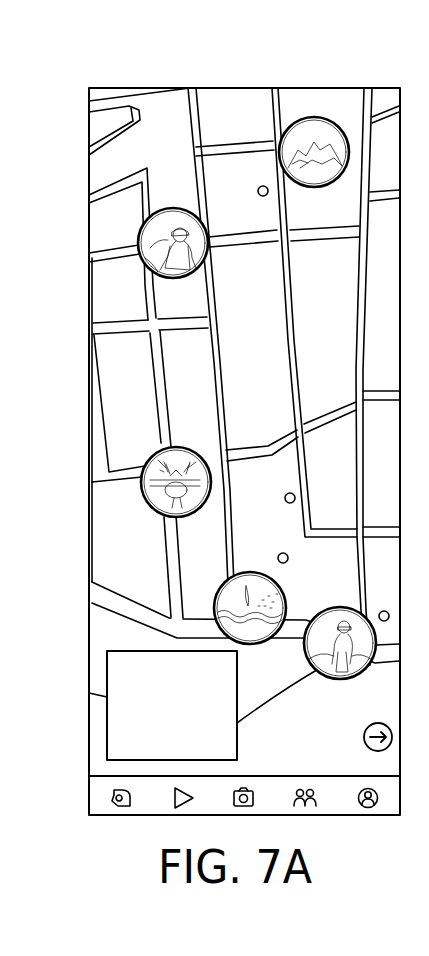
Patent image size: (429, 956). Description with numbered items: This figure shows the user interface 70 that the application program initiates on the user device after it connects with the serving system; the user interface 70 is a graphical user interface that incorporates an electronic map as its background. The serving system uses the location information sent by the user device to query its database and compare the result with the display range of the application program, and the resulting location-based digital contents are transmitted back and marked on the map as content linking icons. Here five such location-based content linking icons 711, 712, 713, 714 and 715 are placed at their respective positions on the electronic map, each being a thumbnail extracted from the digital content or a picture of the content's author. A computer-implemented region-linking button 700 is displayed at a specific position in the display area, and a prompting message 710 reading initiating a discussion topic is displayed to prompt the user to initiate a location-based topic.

The user interface 70 is at (243, 87).
The region-linking button 700 is at (362, 737).
The prompting message 710 is at (107, 737).
The location-based content linking icon 711 is at (175, 207).
The location-based content linking icon 712 is at (314, 116).
The location-based content linking icon 713 is at (193, 446).
The location-based content linking icon 714 is at (250, 571).
The location-based content linking icon 715 is at (338, 606).